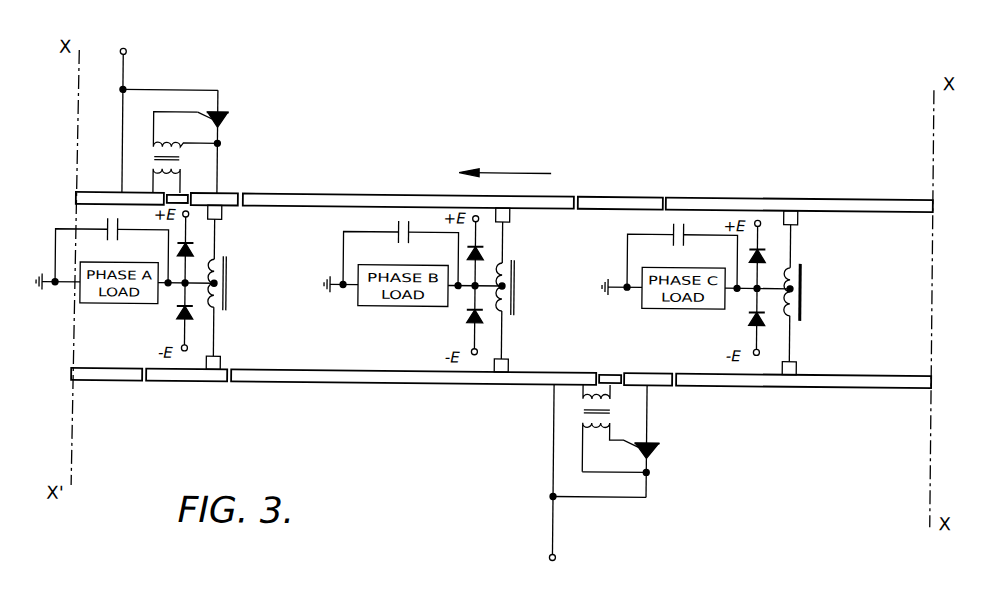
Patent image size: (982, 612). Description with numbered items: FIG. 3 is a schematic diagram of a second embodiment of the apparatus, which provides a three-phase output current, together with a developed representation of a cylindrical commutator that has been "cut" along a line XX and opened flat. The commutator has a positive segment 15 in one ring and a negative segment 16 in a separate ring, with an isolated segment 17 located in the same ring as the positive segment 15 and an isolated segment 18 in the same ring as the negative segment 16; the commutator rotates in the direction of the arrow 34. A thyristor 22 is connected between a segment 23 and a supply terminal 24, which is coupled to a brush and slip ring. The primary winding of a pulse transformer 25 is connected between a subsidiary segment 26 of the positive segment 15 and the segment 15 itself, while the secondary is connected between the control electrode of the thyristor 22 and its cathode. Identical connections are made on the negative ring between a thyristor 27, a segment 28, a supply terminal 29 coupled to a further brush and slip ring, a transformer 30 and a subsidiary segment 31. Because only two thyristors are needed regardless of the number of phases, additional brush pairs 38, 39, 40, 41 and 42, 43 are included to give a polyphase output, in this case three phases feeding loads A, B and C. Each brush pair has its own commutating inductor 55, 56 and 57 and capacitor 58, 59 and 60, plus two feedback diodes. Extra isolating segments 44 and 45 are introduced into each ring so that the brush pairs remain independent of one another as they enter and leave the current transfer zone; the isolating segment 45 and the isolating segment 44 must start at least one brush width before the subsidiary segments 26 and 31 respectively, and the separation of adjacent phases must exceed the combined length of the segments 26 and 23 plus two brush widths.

The positive segment 15 is at (96, 196).
The negative segment 16 is at (344, 384).
The isolated segment 17 is at (406, 196).
The isolated segment 18 is at (131, 384).
The thyristor 22 is at (227, 122).
The segment 23 is at (235, 196).
The supply terminal 24 is at (124, 57).
The pulse transformer 25 is at (128, 172).
The subsidiary segment 26 is at (184, 197).
The thyristor 27 is at (661, 447).
The segment 28 is at (668, 374).
The supply terminal 29 is at (552, 557).
The transformer 30 is at (624, 416).
The subsidiary segment 31 is at (615, 374).
The arrow 34 is at (517, 172).
The brush 38 is at (222, 216).
The brush 39 is at (222, 360).
The brush 40 is at (510, 217).
The brush 41 is at (510, 366).
The brush 42 is at (798, 220).
The brush 43 is at (798, 362).
The isolating segment 44 is at (632, 198).
The isolating segment 45 is at (204, 384).
The commutating inductor 55 is at (228, 292).
The commutating inductor 56 is at (516, 305).
The commutating inductor 57 is at (803, 301).
The capacitor 58 is at (119, 234).
The capacitor 59 is at (410, 236).
The capacitor 60 is at (685, 236).